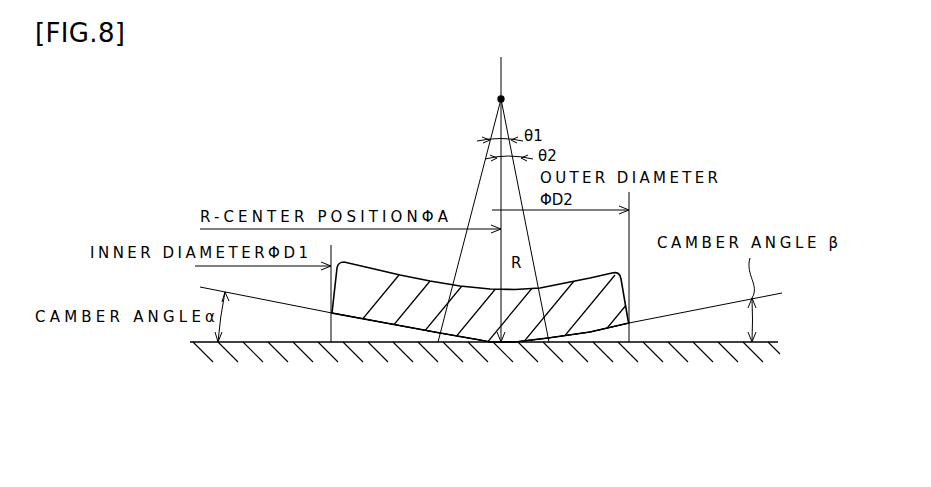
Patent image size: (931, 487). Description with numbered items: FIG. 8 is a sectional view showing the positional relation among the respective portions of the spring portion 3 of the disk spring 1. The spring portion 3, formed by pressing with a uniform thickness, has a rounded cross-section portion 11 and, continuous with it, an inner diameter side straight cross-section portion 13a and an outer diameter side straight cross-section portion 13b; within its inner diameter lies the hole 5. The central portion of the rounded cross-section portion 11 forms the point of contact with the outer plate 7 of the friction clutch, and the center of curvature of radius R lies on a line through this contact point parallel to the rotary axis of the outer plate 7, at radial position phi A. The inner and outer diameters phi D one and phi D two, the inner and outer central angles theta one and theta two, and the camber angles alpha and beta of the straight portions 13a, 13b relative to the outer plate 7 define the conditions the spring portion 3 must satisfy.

The disk spring 1 is at (465, 198).
The spring portion 3 is at (432, 330).
The hole 5 is at (338, 270).
The outer plate 7 is at (278, 342).
The rounded cross-section portion 11 is at (487, 344).
The inner diameter side straight cross-section portion 13a is at (375, 322).
The outer diameter side straight cross-section portion 13b is at (594, 333).